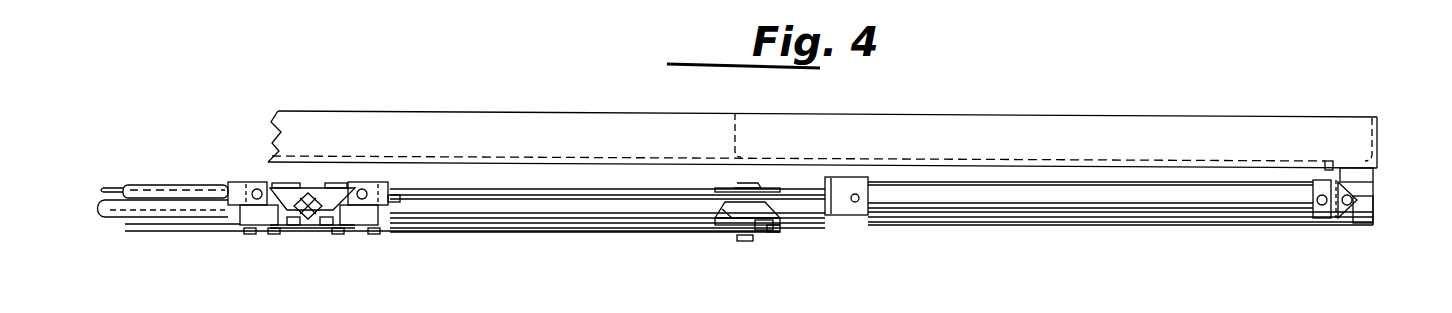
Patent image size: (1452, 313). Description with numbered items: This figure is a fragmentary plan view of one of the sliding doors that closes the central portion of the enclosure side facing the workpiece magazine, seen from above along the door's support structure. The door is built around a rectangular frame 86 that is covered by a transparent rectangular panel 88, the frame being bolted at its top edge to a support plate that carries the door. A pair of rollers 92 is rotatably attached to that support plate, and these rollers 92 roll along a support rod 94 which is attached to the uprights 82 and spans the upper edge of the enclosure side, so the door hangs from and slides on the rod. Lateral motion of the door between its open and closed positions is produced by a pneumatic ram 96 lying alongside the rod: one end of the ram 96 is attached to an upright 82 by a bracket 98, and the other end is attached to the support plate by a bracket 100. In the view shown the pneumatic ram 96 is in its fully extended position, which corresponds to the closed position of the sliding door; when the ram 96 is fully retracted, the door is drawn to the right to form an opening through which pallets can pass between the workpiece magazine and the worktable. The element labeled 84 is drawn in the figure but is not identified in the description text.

The upright 82 is at (1380, 128).
The door panel 84 is at (1040, 118).
The rectangular frame 86 is at (763, 226).
The transparent rectangular panel 88 is at (541, 229).
The rollers 92 is at (288, 197).
The support rod 94 is at (185, 196).
The pneumatic ram 96 is at (1057, 198).
The bracket 98 is at (1345, 222).
The bracket 100 is at (258, 214).